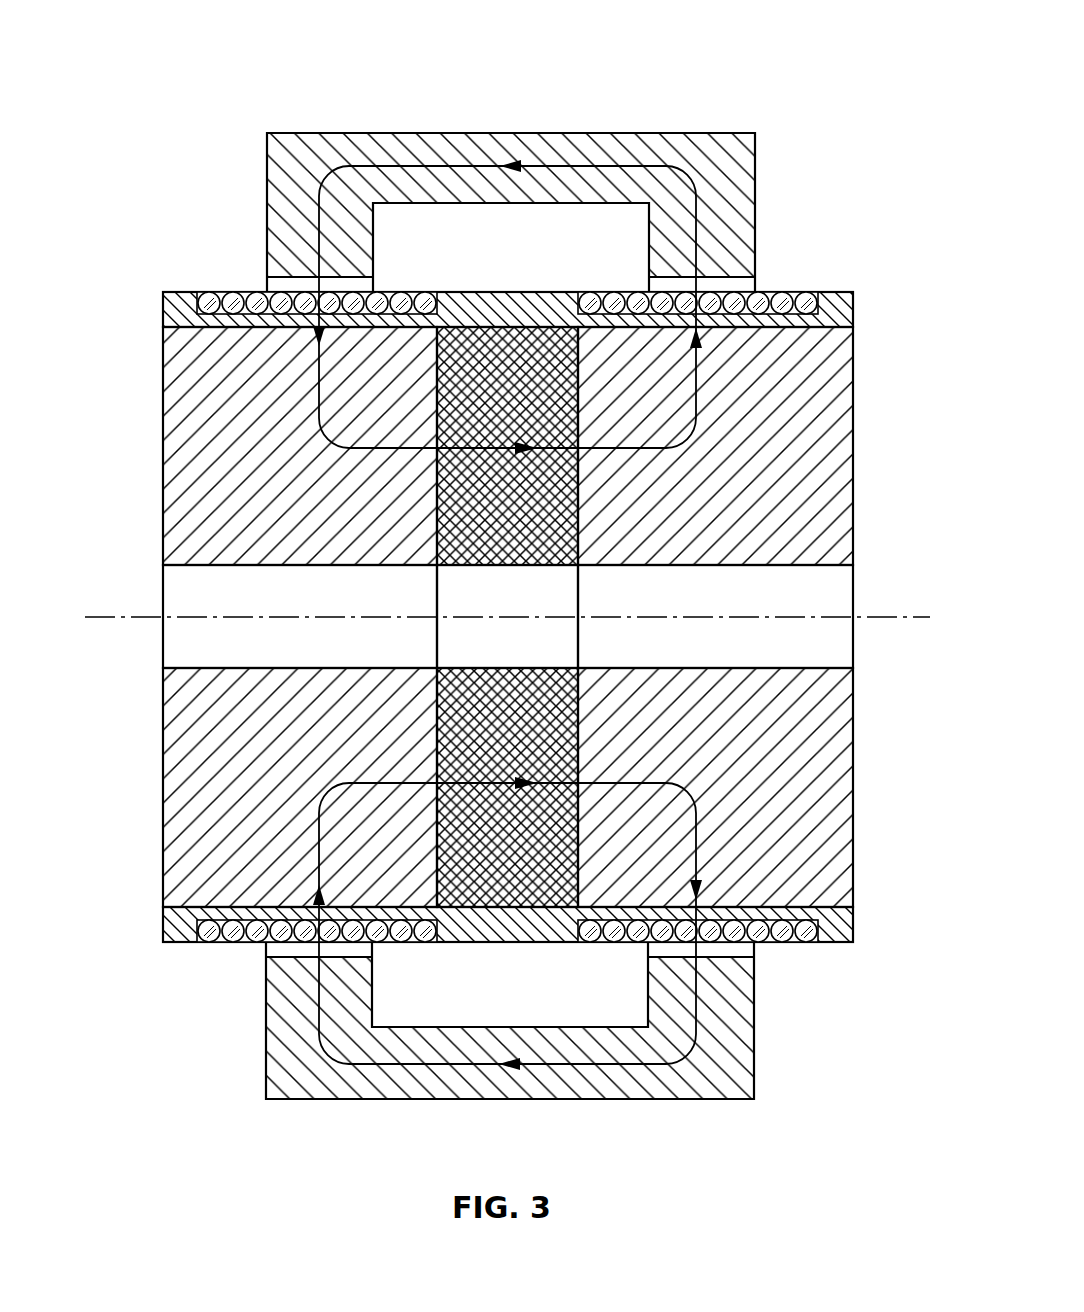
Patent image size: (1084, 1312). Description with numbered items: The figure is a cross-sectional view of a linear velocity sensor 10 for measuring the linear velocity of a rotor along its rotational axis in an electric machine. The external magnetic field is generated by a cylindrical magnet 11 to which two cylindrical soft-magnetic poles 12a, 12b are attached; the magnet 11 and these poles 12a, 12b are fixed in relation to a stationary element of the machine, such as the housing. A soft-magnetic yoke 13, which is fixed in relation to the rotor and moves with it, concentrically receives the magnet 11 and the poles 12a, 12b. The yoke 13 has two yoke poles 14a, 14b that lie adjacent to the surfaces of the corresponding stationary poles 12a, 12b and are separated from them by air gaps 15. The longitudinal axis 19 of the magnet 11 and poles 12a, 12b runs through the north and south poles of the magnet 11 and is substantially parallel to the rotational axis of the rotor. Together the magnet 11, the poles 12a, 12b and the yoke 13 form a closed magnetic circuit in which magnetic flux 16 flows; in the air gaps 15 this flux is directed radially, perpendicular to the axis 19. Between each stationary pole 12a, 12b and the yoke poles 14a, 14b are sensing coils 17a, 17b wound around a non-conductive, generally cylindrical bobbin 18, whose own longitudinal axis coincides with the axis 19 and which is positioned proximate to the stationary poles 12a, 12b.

The linear velocity sensor 10 is at (128, 48).
The cylindrical magnet 11 is at (530, 457).
The soft-magnetic pole 12a is at (163, 392).
The soft-magnetic pole 12b is at (853, 403).
The soft-magnetic yoke 13 is at (326, 130).
The yoke pole 14a is at (287, 270).
The yoke pole 14b is at (726, 268).
The air gaps 15 is at (372, 289).
The magnetic flux 16 is at (696, 427).
The sensing coil 17a is at (232, 300).
The sensing coil 17b is at (788, 300).
The bobbin 18 is at (853, 310).
The longitudinal axis 19 is at (97, 617).